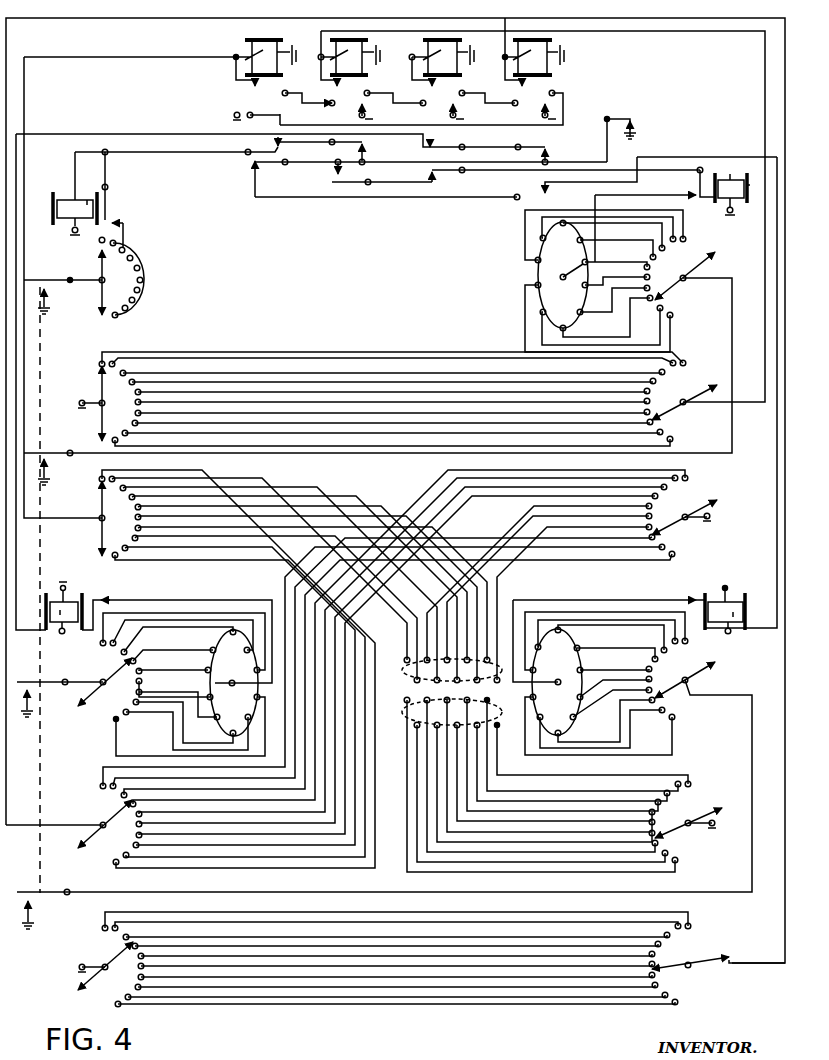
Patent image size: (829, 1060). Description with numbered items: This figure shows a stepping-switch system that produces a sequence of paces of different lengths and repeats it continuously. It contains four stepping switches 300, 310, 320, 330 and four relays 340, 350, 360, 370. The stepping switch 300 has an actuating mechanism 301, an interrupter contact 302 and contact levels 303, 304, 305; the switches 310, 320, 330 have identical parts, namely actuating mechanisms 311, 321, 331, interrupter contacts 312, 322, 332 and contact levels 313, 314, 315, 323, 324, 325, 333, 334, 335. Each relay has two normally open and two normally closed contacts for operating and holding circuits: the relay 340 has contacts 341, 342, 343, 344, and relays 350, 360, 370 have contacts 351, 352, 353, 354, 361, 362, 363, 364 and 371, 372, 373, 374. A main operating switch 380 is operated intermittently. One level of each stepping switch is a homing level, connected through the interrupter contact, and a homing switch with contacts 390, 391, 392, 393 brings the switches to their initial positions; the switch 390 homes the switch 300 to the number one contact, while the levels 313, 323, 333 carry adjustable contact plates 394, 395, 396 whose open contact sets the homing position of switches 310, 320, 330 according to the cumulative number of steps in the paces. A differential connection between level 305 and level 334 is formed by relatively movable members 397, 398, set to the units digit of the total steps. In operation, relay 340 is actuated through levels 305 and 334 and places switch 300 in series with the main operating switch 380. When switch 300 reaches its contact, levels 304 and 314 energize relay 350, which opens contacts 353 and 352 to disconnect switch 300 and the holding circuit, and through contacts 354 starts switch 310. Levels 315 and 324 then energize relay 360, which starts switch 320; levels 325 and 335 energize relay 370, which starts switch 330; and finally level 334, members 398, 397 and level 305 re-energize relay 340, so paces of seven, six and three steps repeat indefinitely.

The stepping switch 300 is at (60, 200).
The actuating mechanism 301 is at (88, 198).
The interrupter contact 302 is at (112, 222).
The contact level 303 is at (100, 268).
The contact level 304 is at (104, 392).
The contact level 305 is at (115, 527).
The stepping switch 310 is at (727, 170).
The actuating mechanism 311 is at (749, 187).
The interrupter contact 312 is at (695, 190).
The contact level 313 is at (665, 294).
The contact level 314 is at (668, 418).
The contact level 315 is at (672, 536).
The stepping switch 320 is at (70, 603).
The actuating mechanism 321 is at (62, 615).
The interrupter contact 322 is at (102, 598).
The contact level 323 is at (112, 672).
The contact level 324 is at (100, 810).
The contact level 325 is at (105, 958).
The stepping switch 330 is at (742, 600).
The actuating mechanism 331 is at (730, 628).
The interrupter contact 332 is at (695, 595).
The contact level 333 is at (672, 670).
The contact level 334 is at (690, 808).
The contact level 335 is at (692, 945).
The relay 340 is at (244, 48).
The contact 341 is at (252, 85).
The contact 342 is at (282, 116).
The contact 343 is at (270, 145).
The contact 344 is at (248, 163).
The relay 350 is at (358, 50).
The contact 351 is at (350, 86).
The contact 352 is at (355, 108).
The contact 353 is at (367, 147).
The contact 354 is at (330, 182).
The relay 360 is at (442, 47).
The contact 361 is at (450, 87).
The contact 362 is at (448, 108).
The contact 363 is at (450, 145).
The contact 364 is at (447, 176).
The relay 370 is at (552, 52).
The contact 371 is at (540, 86).
The contact 372 is at (535, 108).
The contact 373 is at (550, 146).
The contact 374 is at (540, 188).
The main operating switch 380 is at (645, 107).
The homing switch 390 is at (48, 290).
The homing switch 391 is at (52, 463).
The homing switch 392 is at (38, 688).
The homing switch 393 is at (40, 892).
The adjustable contact plate 394 is at (547, 273).
The adjustable contact plate 395 is at (225, 663).
The adjustable contact plate 396 is at (575, 640).
The differential connection member 397 is at (406, 670).
The differential connection member 398 is at (406, 725).